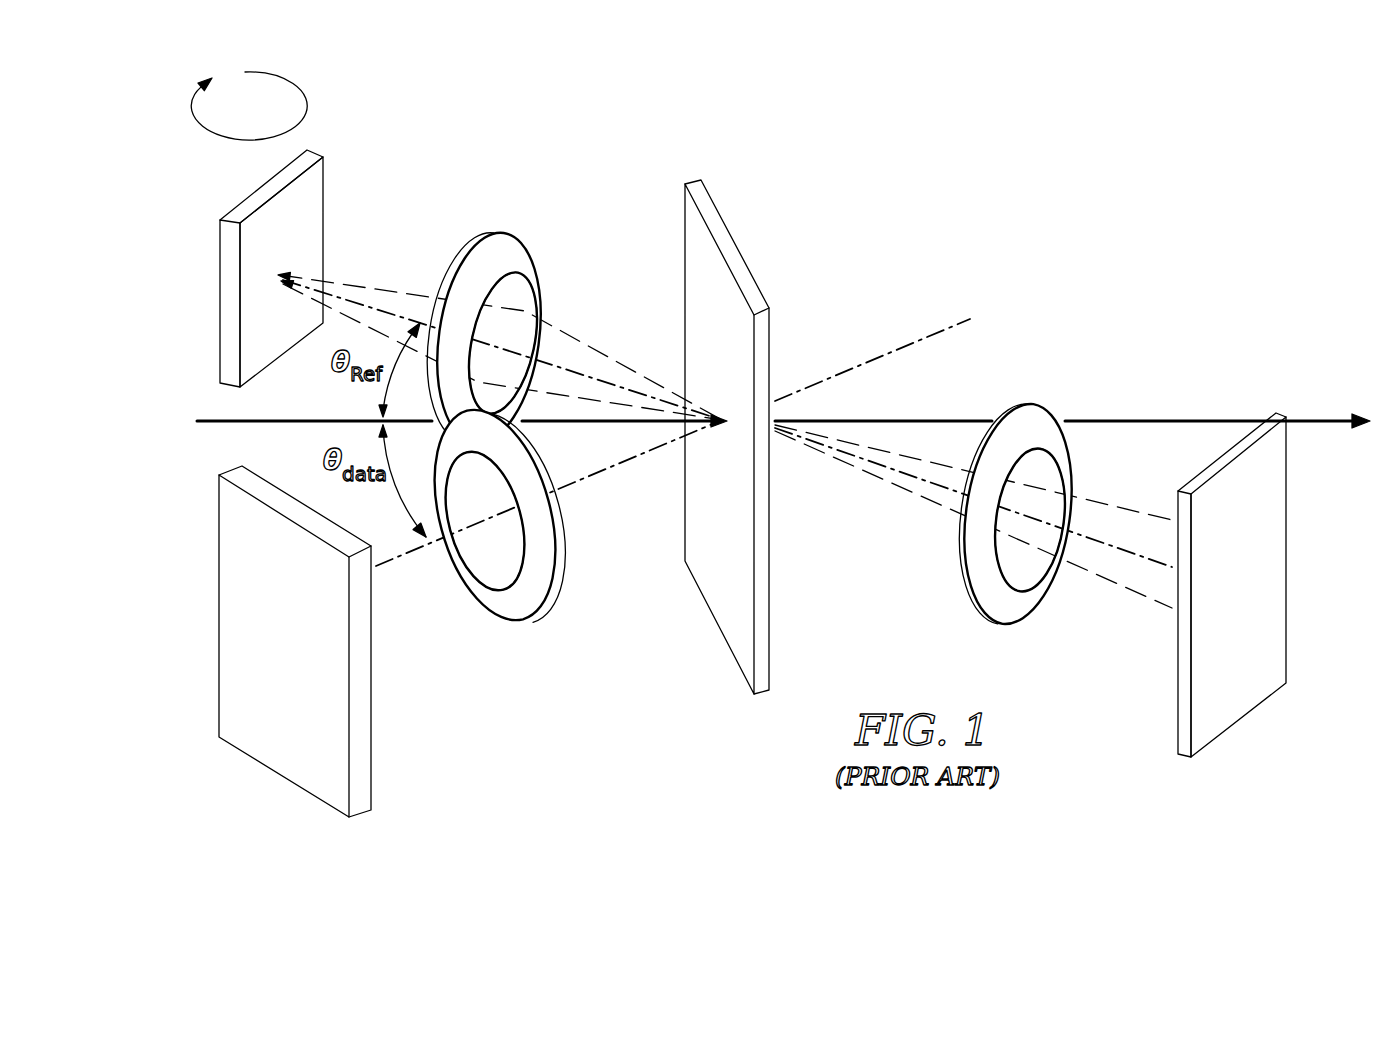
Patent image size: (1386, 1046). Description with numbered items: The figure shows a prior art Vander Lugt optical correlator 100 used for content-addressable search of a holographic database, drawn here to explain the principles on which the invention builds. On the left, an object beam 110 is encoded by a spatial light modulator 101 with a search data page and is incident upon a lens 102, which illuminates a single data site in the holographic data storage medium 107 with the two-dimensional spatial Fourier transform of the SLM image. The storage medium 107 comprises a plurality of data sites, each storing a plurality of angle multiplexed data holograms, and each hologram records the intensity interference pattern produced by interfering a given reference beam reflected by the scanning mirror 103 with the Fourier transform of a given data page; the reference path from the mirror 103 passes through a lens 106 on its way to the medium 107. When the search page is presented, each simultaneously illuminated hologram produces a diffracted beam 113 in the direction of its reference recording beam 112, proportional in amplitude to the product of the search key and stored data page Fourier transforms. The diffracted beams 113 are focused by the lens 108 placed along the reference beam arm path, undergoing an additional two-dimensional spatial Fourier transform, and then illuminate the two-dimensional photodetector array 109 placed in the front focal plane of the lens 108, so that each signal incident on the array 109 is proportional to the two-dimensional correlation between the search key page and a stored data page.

The holographic data storage system 100 is at (1000, 158).
The spatial light modulator 101 is at (218, 550).
The lens 102 is at (552, 603).
The scanning mirror 103 is at (220, 300).
The reference beam lens 106 is at (487, 232).
The holographic data storage medium 107 is at (683, 258).
The lens 108 is at (1047, 411).
The two-dimensional photodetector array 109 is at (1288, 498).
The object beam 110 is at (401, 559).
The reference recording beam 112 is at (356, 300).
The diffracted beam 113 is at (903, 485).